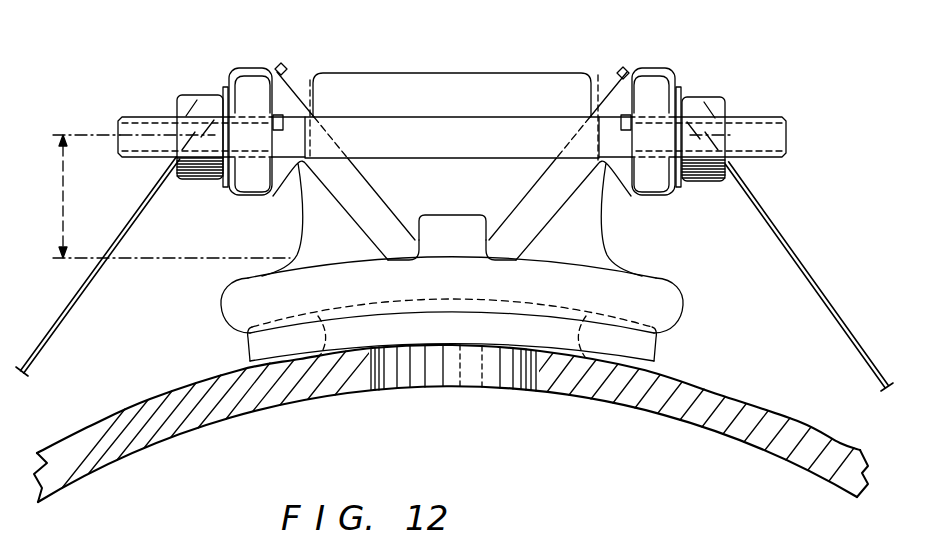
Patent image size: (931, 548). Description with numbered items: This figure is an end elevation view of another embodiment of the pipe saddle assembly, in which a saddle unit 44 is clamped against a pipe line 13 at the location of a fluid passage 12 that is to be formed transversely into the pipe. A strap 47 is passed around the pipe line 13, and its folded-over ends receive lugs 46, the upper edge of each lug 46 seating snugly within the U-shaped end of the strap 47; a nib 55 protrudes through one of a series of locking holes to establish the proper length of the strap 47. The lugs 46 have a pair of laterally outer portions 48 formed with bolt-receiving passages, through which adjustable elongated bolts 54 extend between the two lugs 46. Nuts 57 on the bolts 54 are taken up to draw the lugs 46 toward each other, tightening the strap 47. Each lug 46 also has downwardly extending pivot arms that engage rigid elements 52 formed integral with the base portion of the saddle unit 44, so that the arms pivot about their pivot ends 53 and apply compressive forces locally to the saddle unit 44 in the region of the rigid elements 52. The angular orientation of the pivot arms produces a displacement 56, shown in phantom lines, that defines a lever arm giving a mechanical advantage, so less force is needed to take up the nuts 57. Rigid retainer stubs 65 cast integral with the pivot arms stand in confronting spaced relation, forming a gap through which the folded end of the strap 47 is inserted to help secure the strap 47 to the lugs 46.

The fluid passage 12 is at (388, 392).
The pipe line 13 is at (150, 398).
The saddle unit 44 is at (508, 66).
The lugs 46 is at (291, 74).
The strap 47 is at (97, 281).
The laterally outer portions 48 is at (676, 542).
The rigid elements 52 is at (468, 233).
The pivot ends 53 is at (398, 243).
The adjustable elongated bolts 54 is at (517, 128).
The nib 55 is at (285, 64).
The displacement 56 is at (64, 203).
The nuts 57 is at (189, 98).
The rigid retainer stubs 65 is at (310, 80).